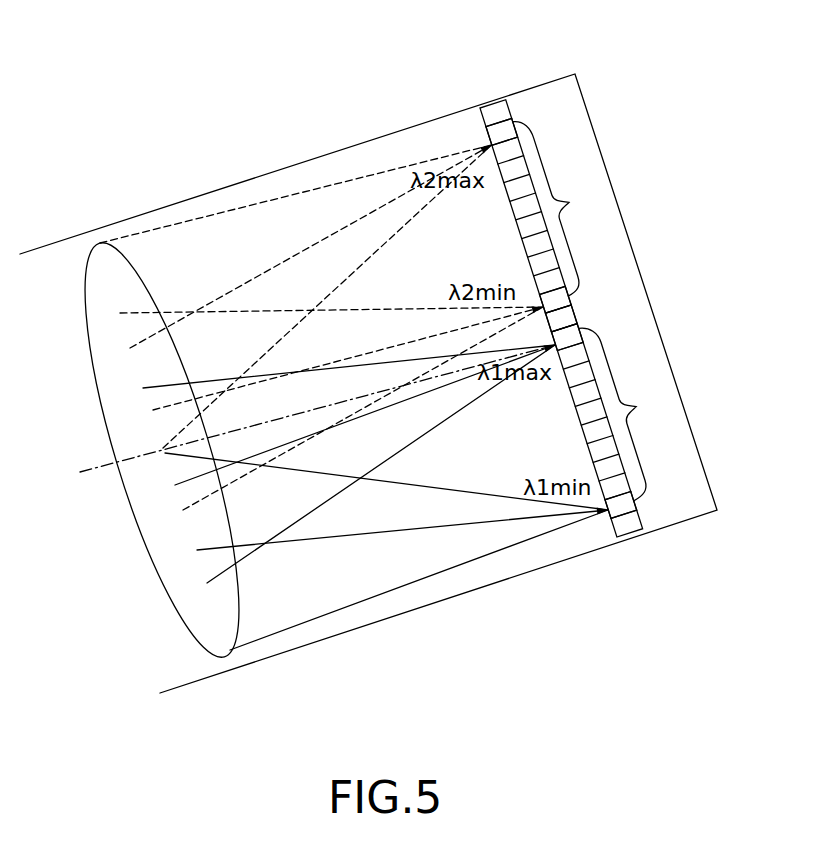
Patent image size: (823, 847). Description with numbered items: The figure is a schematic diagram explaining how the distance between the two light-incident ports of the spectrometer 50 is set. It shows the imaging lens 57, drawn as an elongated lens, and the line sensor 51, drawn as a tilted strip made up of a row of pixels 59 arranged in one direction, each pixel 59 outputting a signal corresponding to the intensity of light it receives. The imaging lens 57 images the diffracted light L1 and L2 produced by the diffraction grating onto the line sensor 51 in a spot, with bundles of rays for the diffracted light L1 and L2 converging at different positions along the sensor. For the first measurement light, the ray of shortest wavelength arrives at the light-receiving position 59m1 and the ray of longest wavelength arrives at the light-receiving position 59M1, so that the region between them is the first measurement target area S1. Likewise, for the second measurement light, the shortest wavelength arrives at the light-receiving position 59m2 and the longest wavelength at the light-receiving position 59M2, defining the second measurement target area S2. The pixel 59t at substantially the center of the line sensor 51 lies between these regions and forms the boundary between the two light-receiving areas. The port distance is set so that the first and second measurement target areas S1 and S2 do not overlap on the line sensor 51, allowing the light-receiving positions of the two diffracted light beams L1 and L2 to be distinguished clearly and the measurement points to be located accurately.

The spectrometer 50 is at (218, 184).
The line sensor 51 is at (492, 103).
The imaging lens 57 is at (100, 241).
The pixels 59 is at (479, 117).
The light-receiving position (pixel) for light λ2max 59M2 is at (511, 132).
The light-receiving position (pixel) for light λ2min 59m2 is at (563, 297).
The pixel at substantially the center 59t is at (571, 318).
The light-receiving position (pixel) for light λ1max 59M1 is at (574, 340).
The light-receiving position (pixel) for light λ1min 59m1 is at (628, 505).
The second measurement target area S2 is at (559, 204).
The first measurement target area S1 is at (621, 410).
The diffracted light L1 is at (363, 607).
The diffracted light L2 is at (316, 186).